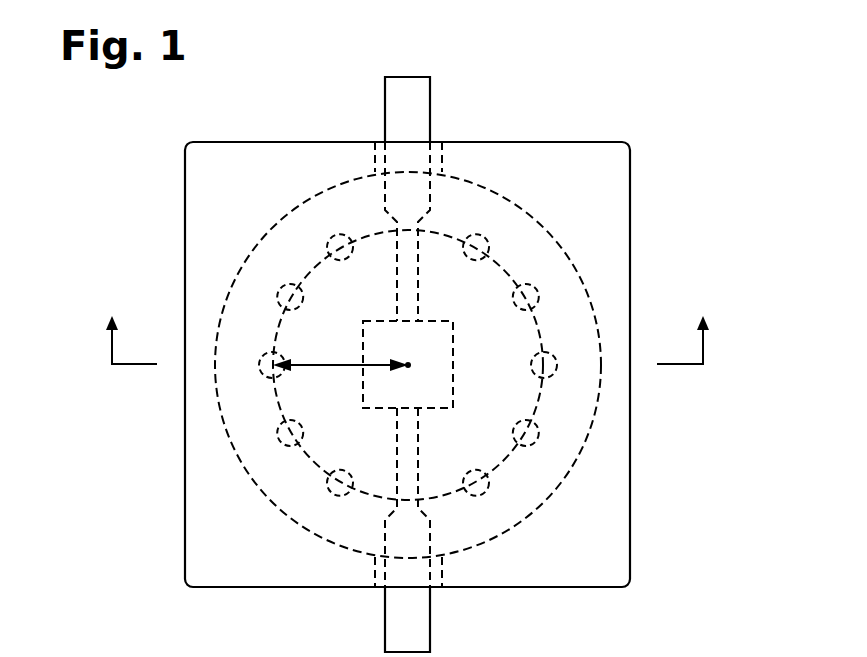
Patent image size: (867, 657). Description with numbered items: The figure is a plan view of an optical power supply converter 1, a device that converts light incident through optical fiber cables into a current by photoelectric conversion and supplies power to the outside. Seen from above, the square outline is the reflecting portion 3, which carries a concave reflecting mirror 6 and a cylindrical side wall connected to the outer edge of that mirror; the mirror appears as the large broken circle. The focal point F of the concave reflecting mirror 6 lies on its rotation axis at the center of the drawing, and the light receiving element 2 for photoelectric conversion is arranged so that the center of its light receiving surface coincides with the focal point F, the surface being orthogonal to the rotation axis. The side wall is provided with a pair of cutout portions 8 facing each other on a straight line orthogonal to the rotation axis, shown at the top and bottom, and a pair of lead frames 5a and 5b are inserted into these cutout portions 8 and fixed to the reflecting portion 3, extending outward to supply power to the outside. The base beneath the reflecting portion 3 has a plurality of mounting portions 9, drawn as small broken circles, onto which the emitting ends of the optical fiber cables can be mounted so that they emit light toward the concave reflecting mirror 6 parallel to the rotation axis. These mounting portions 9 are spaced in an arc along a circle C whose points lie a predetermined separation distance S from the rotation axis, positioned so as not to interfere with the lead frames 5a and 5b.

The optical power supply converter 1 is at (160, 150).
The light receiving element 2 is at (372, 310).
The reflecting portion 3 is at (240, 142).
The lead frame 5a is at (430, 100).
The lead frame 5b is at (430, 617).
The concave reflecting mirror 6 is at (570, 256).
The cutout portion 8 is at (390, 155).
The mounting portion 9 is at (283, 294).
The circle C is at (492, 260).
The focal point F is at (412, 364).
The separation distance S is at (331, 361).